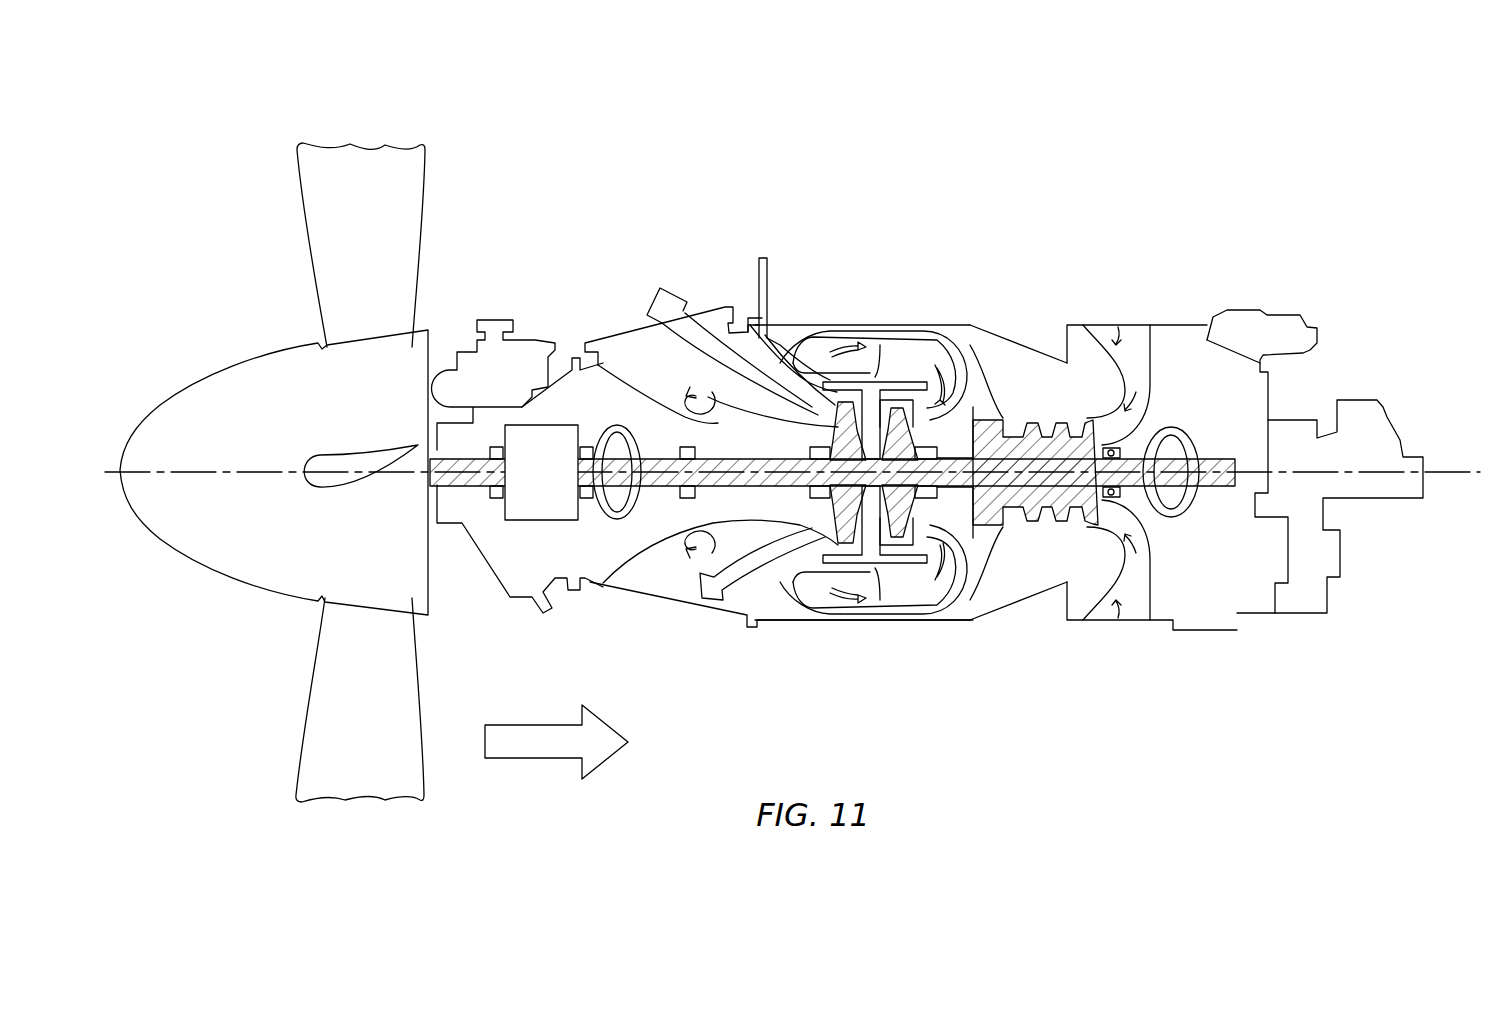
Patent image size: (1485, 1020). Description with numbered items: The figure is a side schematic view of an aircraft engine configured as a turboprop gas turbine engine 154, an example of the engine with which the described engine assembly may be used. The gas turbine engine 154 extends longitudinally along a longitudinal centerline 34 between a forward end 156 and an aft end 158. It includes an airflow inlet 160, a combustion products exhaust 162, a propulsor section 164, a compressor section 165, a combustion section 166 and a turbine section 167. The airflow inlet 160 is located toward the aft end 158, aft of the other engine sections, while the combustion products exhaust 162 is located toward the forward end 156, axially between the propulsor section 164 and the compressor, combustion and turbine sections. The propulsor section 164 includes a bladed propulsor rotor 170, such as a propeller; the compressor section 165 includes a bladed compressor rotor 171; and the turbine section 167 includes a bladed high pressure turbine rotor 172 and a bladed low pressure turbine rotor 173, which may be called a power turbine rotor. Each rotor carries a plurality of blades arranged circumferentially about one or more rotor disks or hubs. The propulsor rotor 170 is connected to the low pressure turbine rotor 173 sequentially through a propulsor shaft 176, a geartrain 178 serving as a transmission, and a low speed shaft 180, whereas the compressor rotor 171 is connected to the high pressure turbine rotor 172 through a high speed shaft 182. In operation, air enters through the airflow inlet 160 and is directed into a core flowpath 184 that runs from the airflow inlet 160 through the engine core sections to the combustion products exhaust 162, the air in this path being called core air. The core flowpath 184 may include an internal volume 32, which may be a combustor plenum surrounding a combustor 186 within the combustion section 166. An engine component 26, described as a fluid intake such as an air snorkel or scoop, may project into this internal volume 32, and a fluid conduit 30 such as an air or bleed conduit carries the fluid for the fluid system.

The engine component 26 is at (748, 322).
The fluid conduit 30 is at (768, 262).
The internal volume 32 is at (777, 330).
The longitudinal centerline 34 is at (1448, 505).
The turboprop gas turbine engine 154 is at (930, 146).
The forward end 156 is at (122, 497).
The aft end 158 is at (1430, 465).
The airflow inlet 160 is at (1138, 316).
The combustion products exhaust 162 is at (711, 302).
The propulsor section 164 is at (382, 122).
The compressor section 165 is at (1040, 552).
The combustion section 166 is at (828, 328).
The turbine section 167 is at (880, 340).
The bladed propulsor rotor 170 is at (323, 610).
The bladed compressor rotor 171 is at (1040, 462).
The bladed high pressure turbine rotor 172 is at (890, 525).
The bladed low pressure turbine rotor 173 is at (815, 525).
The propulsor shaft 176 is at (478, 488).
The geartrain 178 is at (553, 420).
The low speed shaft 180 is at (665, 478).
The high speed shaft 182 is at (978, 545).
The core flowpath 184 is at (742, 598).
The combustor 186 is at (930, 340).